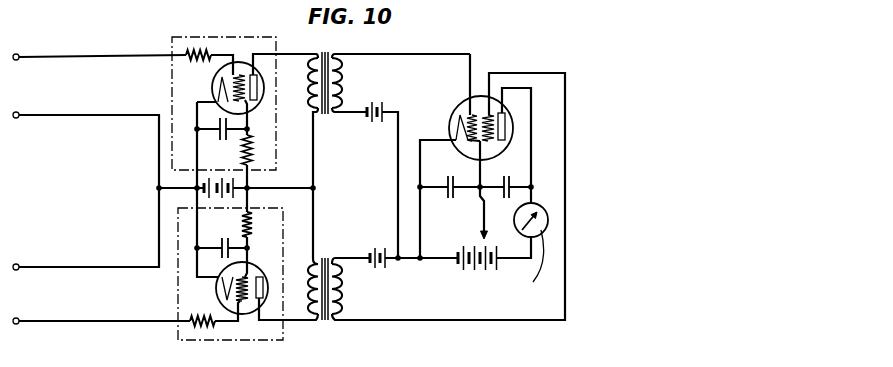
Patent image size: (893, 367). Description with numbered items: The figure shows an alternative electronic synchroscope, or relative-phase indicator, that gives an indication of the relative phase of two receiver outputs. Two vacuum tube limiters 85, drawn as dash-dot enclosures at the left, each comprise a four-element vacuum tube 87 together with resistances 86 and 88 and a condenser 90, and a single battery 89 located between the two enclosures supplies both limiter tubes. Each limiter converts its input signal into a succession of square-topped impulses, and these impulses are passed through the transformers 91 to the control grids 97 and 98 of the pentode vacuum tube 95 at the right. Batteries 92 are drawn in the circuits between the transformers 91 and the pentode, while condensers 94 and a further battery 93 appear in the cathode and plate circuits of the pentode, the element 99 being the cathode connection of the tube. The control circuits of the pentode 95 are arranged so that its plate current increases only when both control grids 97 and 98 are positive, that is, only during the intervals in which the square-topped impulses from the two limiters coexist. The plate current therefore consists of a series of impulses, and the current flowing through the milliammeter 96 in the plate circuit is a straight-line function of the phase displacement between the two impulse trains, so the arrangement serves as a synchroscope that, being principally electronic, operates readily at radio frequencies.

The vacuum tube limiter 85 is at (172, 37).
The resistance 86 is at (195, 44).
The four-element vacuum tube 87 is at (238, 62).
The resistance 88 is at (250, 150).
The battery 89 is at (229, 180).
The condenser 90 is at (225, 142).
The transformer 91 is at (326, 51).
The battery 92 is at (373, 125).
The battery 93 is at (471, 243).
The condenser 94 is at (450, 174).
The pentode vacuum tube 95 is at (452, 112).
The milliammeter 96 is at (549, 215).
The control grid 97 is at (472, 112).
The control grid 98 is at (486, 110).
The cathode 99 is at (482, 146).